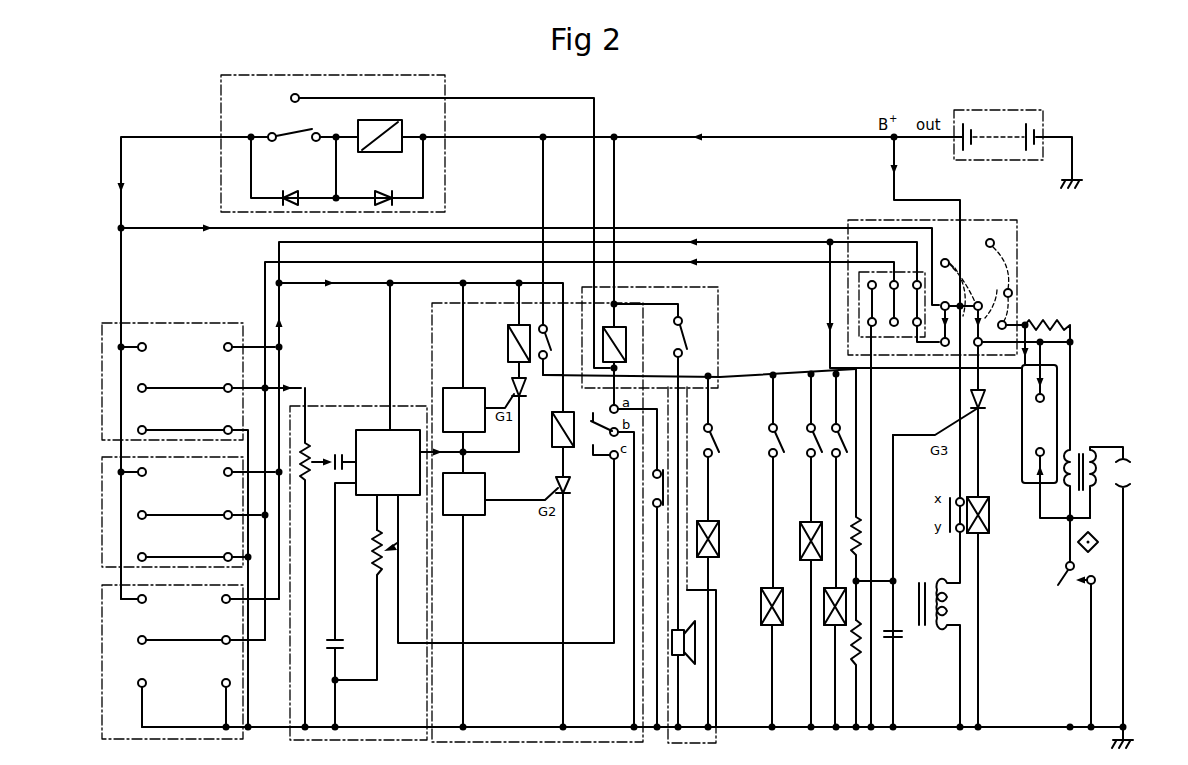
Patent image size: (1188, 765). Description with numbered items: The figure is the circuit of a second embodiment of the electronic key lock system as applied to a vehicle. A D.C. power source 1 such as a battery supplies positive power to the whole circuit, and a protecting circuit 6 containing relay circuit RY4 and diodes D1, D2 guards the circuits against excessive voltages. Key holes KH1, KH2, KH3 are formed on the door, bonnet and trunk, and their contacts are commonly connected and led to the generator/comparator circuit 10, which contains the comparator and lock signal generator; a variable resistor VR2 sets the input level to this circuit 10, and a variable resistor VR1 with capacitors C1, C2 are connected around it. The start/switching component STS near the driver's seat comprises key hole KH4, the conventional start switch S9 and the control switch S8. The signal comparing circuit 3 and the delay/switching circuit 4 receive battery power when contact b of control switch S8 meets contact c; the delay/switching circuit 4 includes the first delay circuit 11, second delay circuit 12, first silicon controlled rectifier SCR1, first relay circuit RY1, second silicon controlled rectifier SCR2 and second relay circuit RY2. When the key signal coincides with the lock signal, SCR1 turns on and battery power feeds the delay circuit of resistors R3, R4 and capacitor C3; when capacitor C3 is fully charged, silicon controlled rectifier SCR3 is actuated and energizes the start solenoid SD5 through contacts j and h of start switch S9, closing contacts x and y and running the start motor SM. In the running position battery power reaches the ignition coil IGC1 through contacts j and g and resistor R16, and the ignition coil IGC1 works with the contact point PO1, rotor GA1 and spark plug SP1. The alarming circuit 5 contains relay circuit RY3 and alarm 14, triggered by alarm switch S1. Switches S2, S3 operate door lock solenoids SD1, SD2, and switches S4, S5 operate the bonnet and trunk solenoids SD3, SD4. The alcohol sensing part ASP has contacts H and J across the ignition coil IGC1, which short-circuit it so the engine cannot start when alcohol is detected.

The D.C. power source 1 is at (1011, 110).
The signal comparing circuit 3 is at (393, 742).
The delay/switching circuit 4 is at (547, 742).
The alarming circuit 5 is at (718, 318).
The protecting circuit 6 is at (445, 80).
The generator/comparator circuit 10 is at (397, 430).
The first delay circuit 11 is at (455, 388).
The second delay circuit 12 is at (468, 515).
The alarm 14 is at (684, 666).
The key hole KH1 is at (102, 358).
The key hole KH2 is at (102, 482).
The key hole KH3 is at (102, 634).
The key hole KH4 is at (859, 285).
The start/switching component STS is at (1017, 245).
The control switch S8 is at (940, 339).
The start switch S9 is at (975, 275).
The first relay circuit RY1 is at (508, 335).
The second relay circuit RY2 is at (552, 440).
The relay circuit RY3 is at (649, 383).
The relay circuit RY4 is at (397, 123).
The first silicon controlled rectifier SCR1 is at (511, 384).
The second silicon controlled rectifier SCR2 is at (544, 587).
The silicon controlled rectifier SCR3 is at (971, 399).
The diode D1 is at (295, 188).
The diode D2 is at (382, 188).
The variable resistor VR1 is at (366, 605).
The variable resistor VR2 is at (317, 557).
The capacitor C1 is at (341, 450).
The capacitor C2 is at (349, 680).
The capacitor C3 is at (889, 581).
The resistor R3 is at (863, 531).
The resistor R4 is at (863, 640).
The resistor R16 is at (1052, 322).
The alarm switch S1 is at (650, 598).
The switch S2 is at (719, 448).
The switch S3 is at (783, 481).
The switch S4 is at (814, 448).
The switch S5 is at (837, 481).
The door lock solenoid SD1 is at (719, 540).
The door lock solenoid SD2 is at (758, 598).
The solenoid SD3 is at (799, 532).
The solenoid SD4 is at (823, 622).
The start solenoid SD5 is at (985, 535).
The start motor SM is at (938, 629).
The alcohol sensing part ASP is at (1022, 458).
The ignition coil IGC1 is at (1080, 452).
The spark plug SP1 is at (1132, 486).
The rotor GA1 is at (1096, 548).
The contact point PO1 is at (1070, 622).